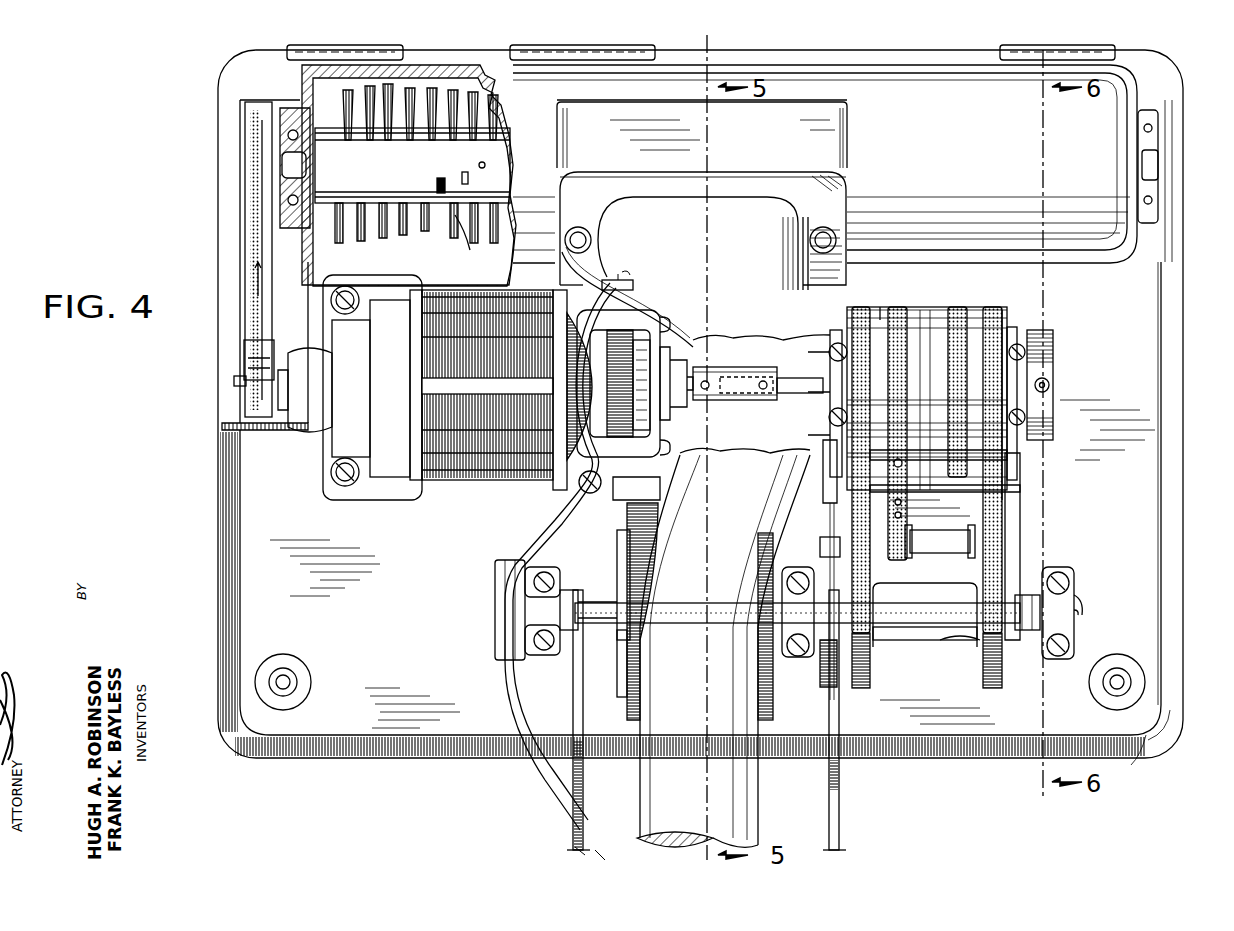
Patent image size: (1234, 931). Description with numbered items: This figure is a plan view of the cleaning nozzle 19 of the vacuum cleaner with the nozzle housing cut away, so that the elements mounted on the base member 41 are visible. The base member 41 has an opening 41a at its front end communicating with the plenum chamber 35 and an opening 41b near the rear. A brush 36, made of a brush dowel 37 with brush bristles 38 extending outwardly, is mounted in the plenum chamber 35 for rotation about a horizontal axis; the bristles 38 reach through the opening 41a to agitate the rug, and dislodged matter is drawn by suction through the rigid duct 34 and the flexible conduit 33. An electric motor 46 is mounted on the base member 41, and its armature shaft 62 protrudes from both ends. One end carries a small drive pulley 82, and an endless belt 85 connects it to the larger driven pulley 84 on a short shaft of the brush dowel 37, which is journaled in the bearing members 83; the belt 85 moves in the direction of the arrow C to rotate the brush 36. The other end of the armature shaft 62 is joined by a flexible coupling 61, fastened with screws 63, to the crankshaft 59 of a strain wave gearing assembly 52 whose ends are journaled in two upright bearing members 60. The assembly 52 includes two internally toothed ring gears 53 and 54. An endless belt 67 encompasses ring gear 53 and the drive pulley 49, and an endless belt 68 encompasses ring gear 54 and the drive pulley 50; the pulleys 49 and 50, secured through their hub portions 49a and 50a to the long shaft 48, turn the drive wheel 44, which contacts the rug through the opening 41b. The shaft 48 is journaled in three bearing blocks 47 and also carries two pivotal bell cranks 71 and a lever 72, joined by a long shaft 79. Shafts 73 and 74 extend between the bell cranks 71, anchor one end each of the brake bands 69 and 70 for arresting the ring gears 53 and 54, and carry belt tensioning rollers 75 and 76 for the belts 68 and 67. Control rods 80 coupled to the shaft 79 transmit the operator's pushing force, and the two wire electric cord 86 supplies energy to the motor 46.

The nozzle 19 is at (1166, 753).
The flexible conduit 33 is at (745, 787).
The rigid duct 34 is at (742, 262).
The plenum chamber 35 is at (323, 90).
The brush 36 is at (401, 240).
The brush dowel 37 is at (418, 177).
The brush bristles 38 is at (470, 250).
The base member 41 is at (1175, 490).
The opening 41a is at (375, 240).
The opening 41b is at (625, 672).
The drive wheel 44 is at (774, 705).
The electric motor 46 is at (505, 486).
The bearing blocks 47 is at (518, 607).
The long shaft 48 is at (1082, 610).
The drive pulley 49 is at (870, 678).
The hub portion 49a is at (925, 600).
The drive pulley 50 is at (983, 678).
The hub portion 50a is at (955, 640).
The strain wave gearing assembly 52 is at (929, 449).
The ring gear 53 is at (880, 300).
The ring gear 54 is at (995, 313).
The crankshaft 59 is at (795, 393).
The upright bearing members 60 is at (830, 342).
The flexible coupling 61 is at (737, 400).
The armature shaft 62 is at (234, 384).
The screws 63 is at (709, 380).
The endless belt 67 is at (860, 318).
The endless belt 68 is at (1005, 315).
The brake band 69 is at (898, 308).
The brake band 70 is at (957, 308).
The bell cranks 71 is at (1020, 580).
The lever 72 is at (568, 595).
The shaft 73 is at (930, 553).
The shaft 74 is at (920, 500).
The belt tensioning roller 75 is at (1020, 520).
The belt tensioning roller 76 is at (835, 515).
The long shaft 79 is at (900, 612).
The control rods 80 is at (583, 786).
The drive pulley 82 is at (244, 352).
The bearing members 83 is at (294, 165).
The driven pulley 84 is at (245, 200).
The endless belt 85 is at (262, 248).
The electric cord 86 is at (512, 700).
The arrow C is at (262, 286).